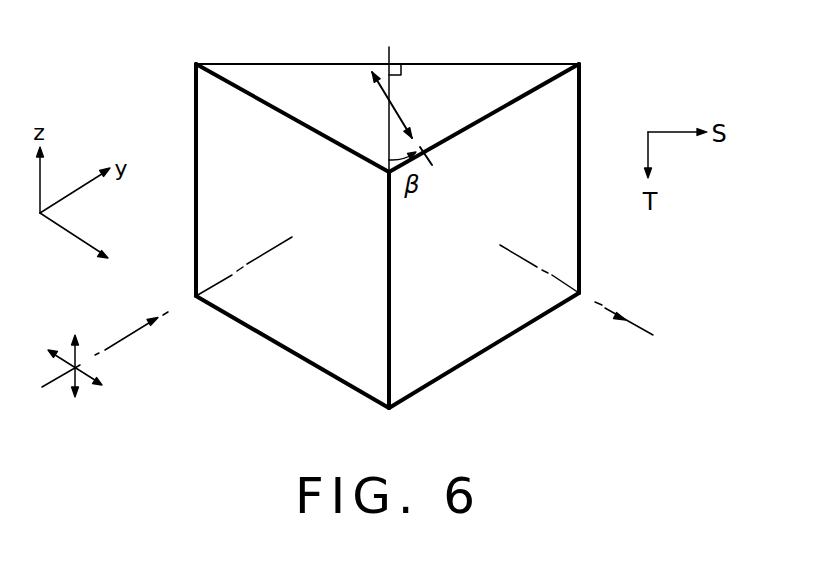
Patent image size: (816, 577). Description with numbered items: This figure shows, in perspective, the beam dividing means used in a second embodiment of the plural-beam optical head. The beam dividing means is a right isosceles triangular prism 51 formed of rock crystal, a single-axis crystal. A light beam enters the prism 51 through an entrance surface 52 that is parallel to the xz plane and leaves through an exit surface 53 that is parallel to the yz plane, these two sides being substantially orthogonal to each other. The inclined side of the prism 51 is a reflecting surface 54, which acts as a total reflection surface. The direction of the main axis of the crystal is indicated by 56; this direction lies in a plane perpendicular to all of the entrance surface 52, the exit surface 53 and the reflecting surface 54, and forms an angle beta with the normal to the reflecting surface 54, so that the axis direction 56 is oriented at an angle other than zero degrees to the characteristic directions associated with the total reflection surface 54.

The prism 51 is at (429, 51).
The first reflecting surface edge 52 is at (321, 360).
The second reflecting surface edge 53 is at (478, 346).
The roof edge 54 is at (533, 63).
The direction of displacement arrow 56 is at (402, 105).